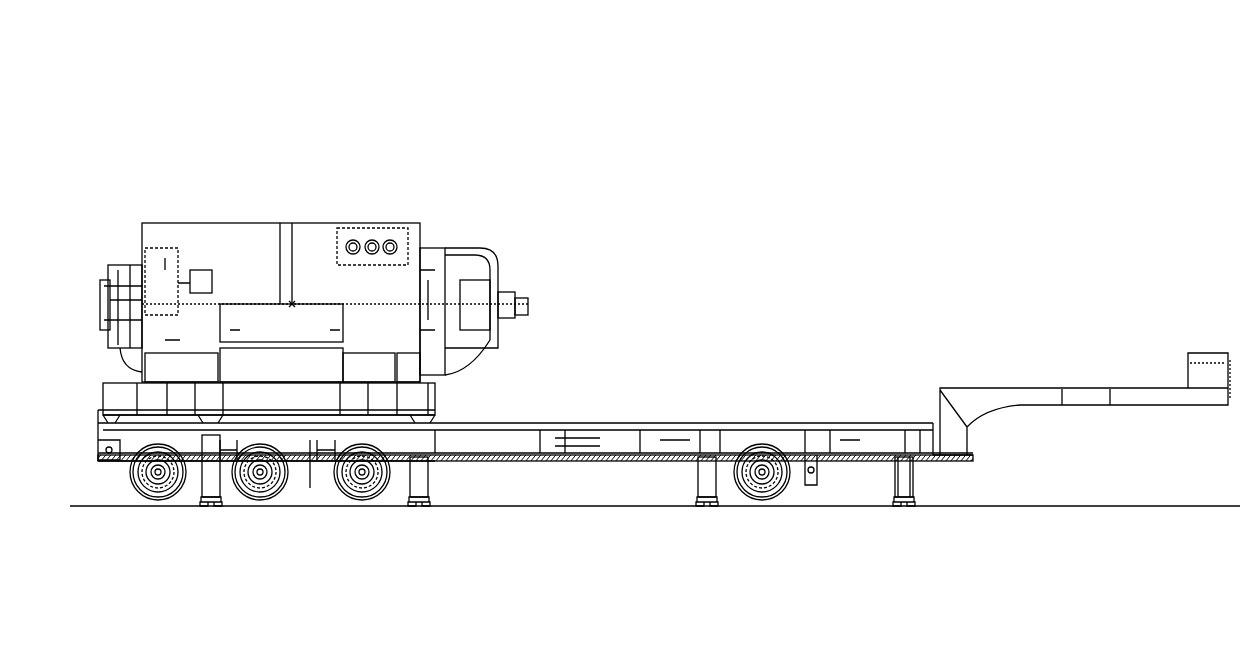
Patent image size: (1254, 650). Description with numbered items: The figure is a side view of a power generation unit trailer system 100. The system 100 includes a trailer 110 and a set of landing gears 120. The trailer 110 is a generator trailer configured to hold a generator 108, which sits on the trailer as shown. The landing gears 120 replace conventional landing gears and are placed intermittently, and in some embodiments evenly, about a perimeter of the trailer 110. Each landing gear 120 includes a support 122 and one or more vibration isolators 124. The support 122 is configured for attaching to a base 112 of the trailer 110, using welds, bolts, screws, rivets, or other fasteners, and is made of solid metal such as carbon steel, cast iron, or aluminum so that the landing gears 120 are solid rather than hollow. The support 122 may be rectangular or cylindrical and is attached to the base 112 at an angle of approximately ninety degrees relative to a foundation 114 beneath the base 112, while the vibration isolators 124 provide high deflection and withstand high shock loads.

The power generation unit trailer system 100 is at (917, 91).
The generator 108 is at (392, 240).
The trailer 110 is at (838, 423).
The base 112 is at (97, 407).
The foundation 114 is at (643, 541).
The landing gears 120 is at (932, 524).
The support 122 is at (905, 472).
The vibration isolator 124 is at (902, 508).